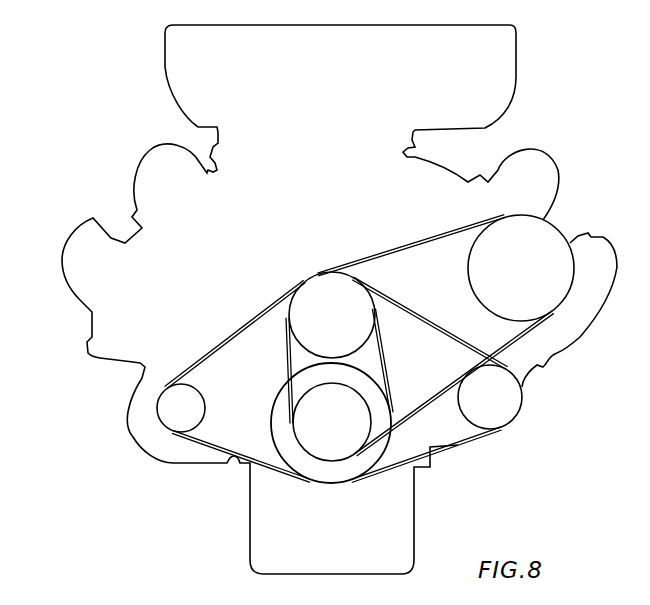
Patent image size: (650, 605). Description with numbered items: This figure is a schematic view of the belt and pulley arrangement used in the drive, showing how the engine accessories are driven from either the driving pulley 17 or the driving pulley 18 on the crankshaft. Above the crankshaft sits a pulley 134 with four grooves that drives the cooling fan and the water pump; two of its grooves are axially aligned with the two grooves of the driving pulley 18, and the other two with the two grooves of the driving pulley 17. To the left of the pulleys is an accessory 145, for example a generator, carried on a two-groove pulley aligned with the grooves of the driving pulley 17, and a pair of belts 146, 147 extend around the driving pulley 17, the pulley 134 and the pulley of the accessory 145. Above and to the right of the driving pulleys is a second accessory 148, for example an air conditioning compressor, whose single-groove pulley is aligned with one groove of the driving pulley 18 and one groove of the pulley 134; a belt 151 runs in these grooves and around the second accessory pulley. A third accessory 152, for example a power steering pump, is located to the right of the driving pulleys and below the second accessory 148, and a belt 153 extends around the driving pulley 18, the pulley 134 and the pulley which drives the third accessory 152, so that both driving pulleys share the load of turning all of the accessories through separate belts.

The driving pulley 17 is at (373, 467).
The driving pulley 18 is at (336, 422).
The pulley 134 is at (348, 334).
The accessory 145 is at (187, 410).
The belt 146 is at (238, 334).
The belt 147 is at (284, 300).
The second accessory 148 is at (527, 250).
The belt 151 is at (413, 247).
The third accessory 152 is at (512, 405).
The belt 153 is at (457, 444).